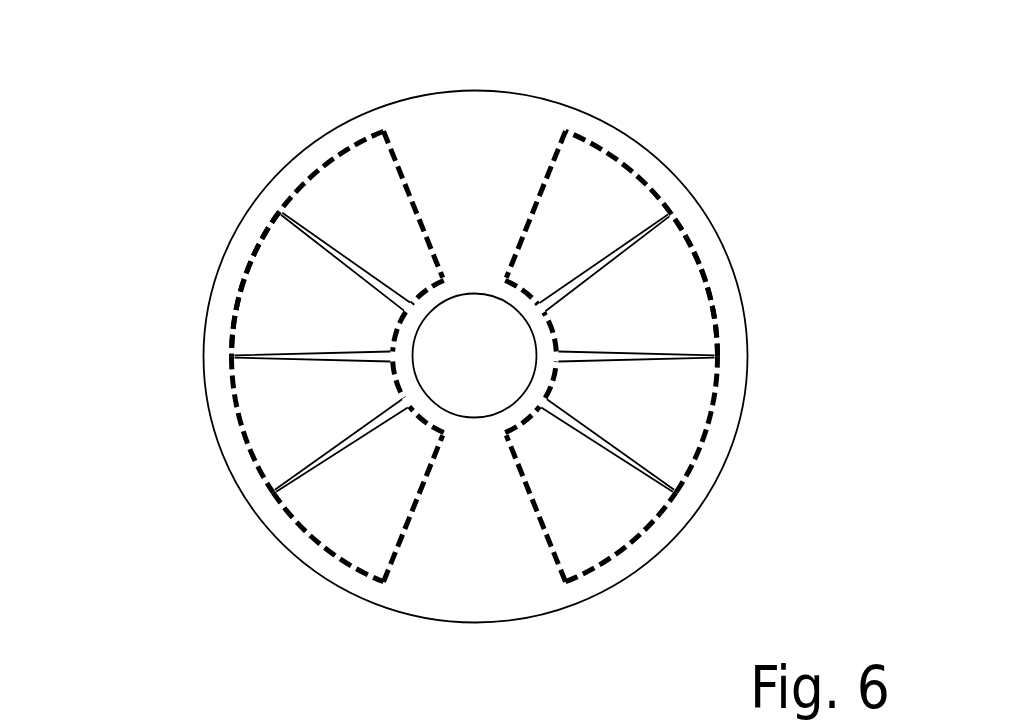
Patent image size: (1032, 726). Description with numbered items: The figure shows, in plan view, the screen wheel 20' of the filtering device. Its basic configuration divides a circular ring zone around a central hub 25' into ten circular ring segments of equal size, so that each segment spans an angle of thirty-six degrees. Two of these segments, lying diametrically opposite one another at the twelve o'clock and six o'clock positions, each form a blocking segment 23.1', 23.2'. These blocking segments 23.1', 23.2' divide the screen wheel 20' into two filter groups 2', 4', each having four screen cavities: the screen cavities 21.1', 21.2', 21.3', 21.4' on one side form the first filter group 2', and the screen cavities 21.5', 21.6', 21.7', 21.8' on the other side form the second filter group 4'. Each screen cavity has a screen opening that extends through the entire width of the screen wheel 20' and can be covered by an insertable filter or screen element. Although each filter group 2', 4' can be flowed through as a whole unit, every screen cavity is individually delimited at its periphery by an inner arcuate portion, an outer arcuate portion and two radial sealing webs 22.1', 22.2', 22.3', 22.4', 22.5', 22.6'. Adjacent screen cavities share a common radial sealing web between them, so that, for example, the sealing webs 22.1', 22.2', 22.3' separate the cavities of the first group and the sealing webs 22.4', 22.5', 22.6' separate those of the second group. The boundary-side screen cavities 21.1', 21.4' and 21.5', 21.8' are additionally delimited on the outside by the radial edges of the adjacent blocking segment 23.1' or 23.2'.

The screen wheel 20' is at (412, 320).
The filter group 2' is at (187, 271).
The filter group 4' is at (759, 271).
The central hub 25' is at (499, 217).
The screen cavity 21.1' is at (356, 552).
The screen cavity 21.2' is at (231, 425).
The screen cavity 21.3' is at (232, 284).
The screen cavity 21.4' is at (356, 160).
The screen cavity 21.5' is at (589, 160).
The screen cavity 21.6' is at (715, 285).
The screen cavity 21.7' is at (715, 425).
The screen cavity 21.8' is at (590, 552).
The radial sealing web 22.1' is at (233, 481).
The radial sealing web 22.2' is at (224, 371).
The radial sealing web 22.3' is at (234, 220).
The radial sealing web 22.4' is at (713, 220).
The radial sealing web 22.5' is at (723, 347).
The radial sealing web 22.6' is at (713, 481).
The blocking segment 23.1' is at (438, 104).
The blocking segment 23.2' is at (440, 625).